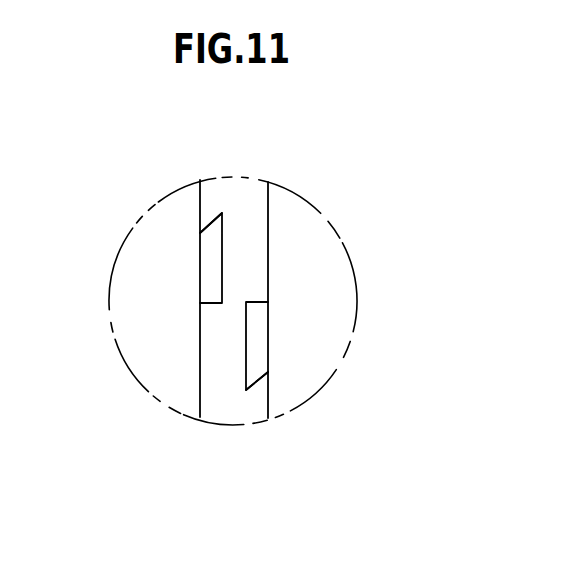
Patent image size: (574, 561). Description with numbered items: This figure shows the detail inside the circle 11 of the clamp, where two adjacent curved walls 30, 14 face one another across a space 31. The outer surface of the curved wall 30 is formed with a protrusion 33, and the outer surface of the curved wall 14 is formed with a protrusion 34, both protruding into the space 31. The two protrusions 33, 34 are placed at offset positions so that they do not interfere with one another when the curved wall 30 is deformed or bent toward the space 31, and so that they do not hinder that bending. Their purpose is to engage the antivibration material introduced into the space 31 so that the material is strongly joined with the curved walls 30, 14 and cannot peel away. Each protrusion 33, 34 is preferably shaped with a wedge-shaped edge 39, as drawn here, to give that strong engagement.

The circle 11 is at (343, 250).
The curved wall 14 is at (318, 217).
The curved wall 30 is at (142, 250).
The space 31 is at (230, 187).
The protrusion 33 is at (208, 268).
The protrusion 34 is at (262, 330).
The wedge-shaped edge 39 is at (222, 213).